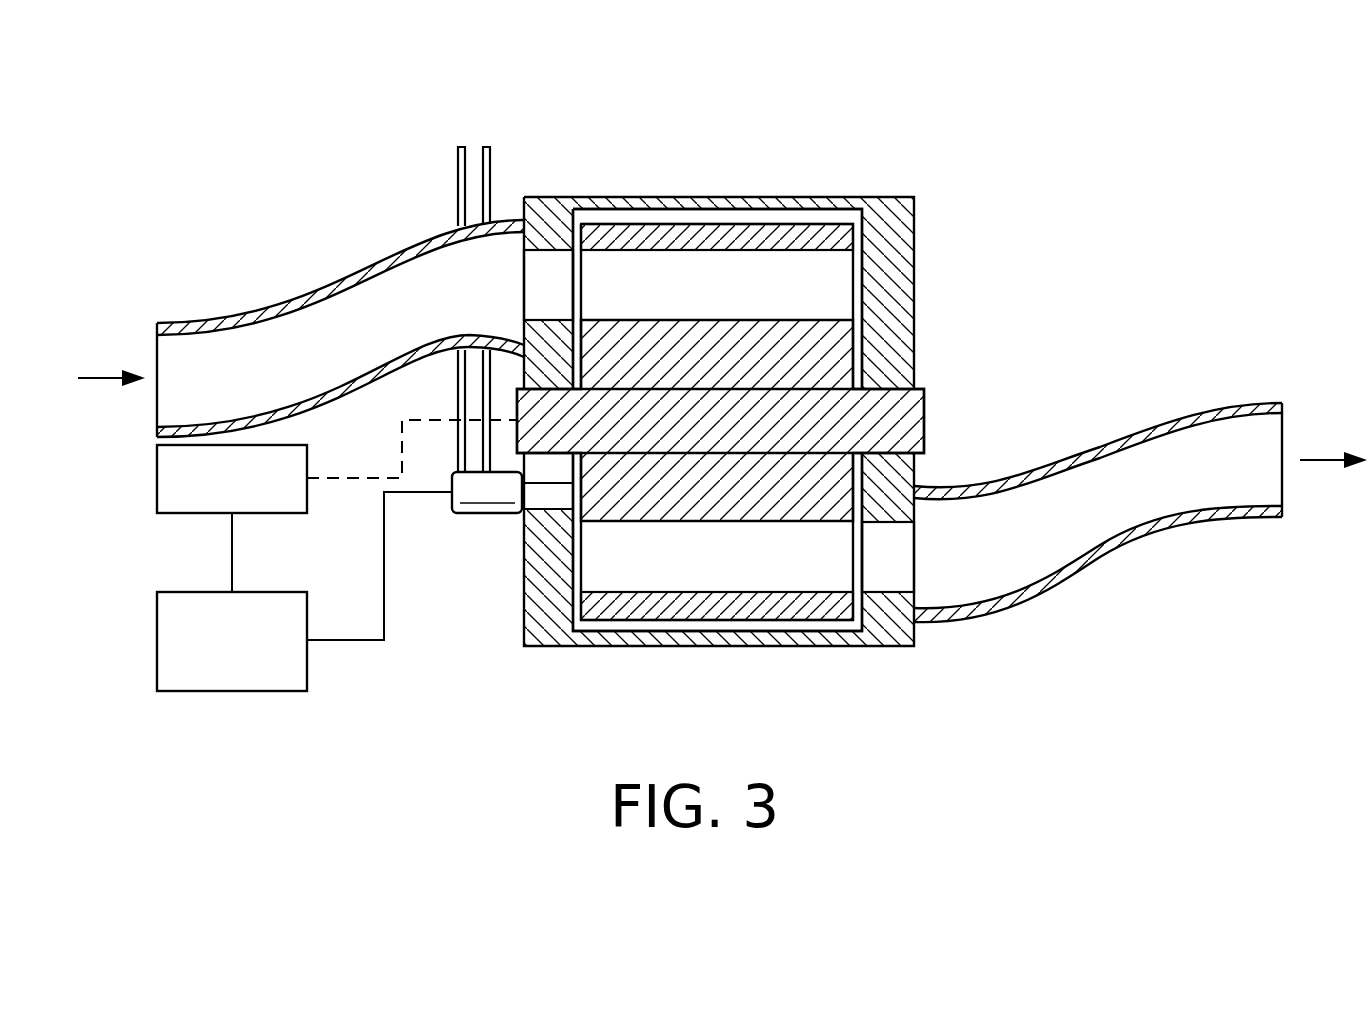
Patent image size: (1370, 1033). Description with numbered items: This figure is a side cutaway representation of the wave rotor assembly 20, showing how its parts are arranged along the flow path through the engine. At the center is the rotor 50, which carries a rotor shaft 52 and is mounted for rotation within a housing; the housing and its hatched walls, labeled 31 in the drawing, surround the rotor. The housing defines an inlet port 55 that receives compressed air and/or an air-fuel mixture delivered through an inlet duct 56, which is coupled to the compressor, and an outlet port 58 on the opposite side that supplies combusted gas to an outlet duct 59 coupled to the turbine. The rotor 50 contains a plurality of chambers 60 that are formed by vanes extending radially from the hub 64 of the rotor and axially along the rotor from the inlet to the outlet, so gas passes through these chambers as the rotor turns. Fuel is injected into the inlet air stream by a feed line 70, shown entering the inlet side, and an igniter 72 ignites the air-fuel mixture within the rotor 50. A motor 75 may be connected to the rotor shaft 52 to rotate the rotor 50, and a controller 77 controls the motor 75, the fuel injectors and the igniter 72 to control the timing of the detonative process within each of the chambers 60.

The wave rotor assembly 20 is at (755, 386).
The housing 31 is at (882, 197).
The rotor 50 is at (752, 234).
The rotor shaft 52 is at (895, 388).
The inlet port 55 is at (550, 273).
The inlet duct 56 is at (218, 320).
The outlet port 58 is at (893, 555).
The outlet duct 59 is at (1213, 520).
The chambers 60 is at (695, 277).
The hub 64 is at (832, 353).
The feed line 70 is at (485, 147).
The igniter 72 is at (515, 515).
The motor 75 is at (168, 484).
The controller 77 is at (168, 620).